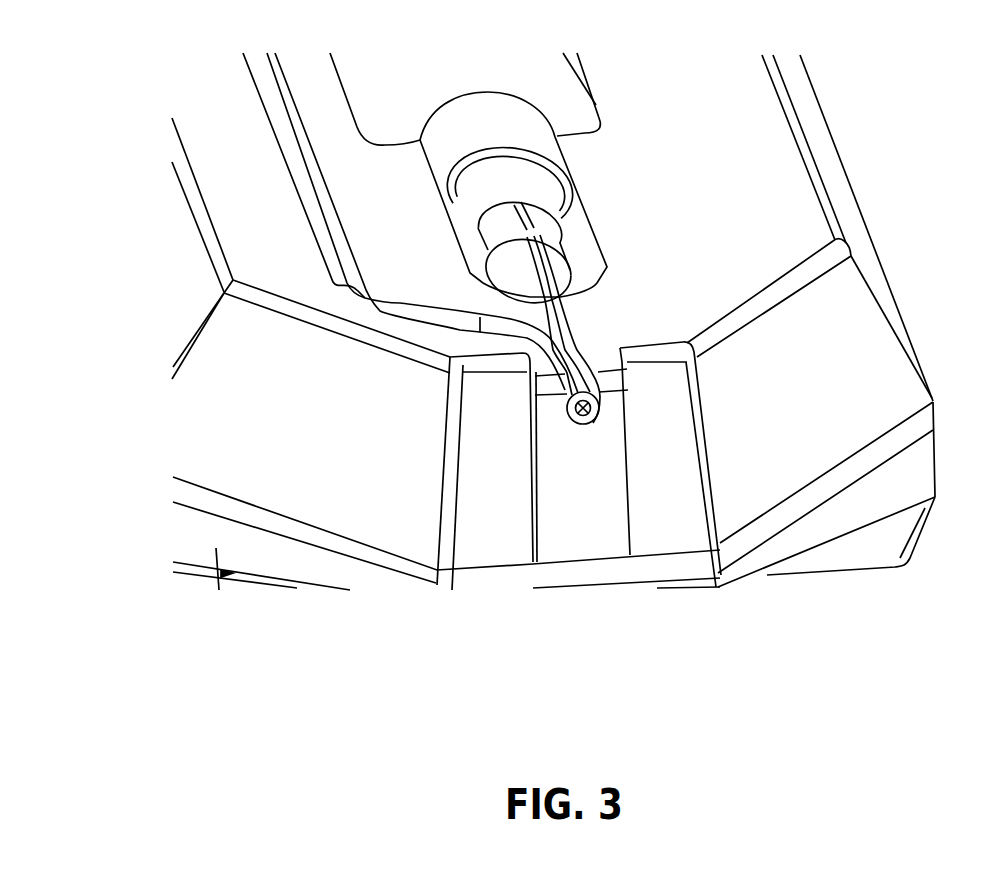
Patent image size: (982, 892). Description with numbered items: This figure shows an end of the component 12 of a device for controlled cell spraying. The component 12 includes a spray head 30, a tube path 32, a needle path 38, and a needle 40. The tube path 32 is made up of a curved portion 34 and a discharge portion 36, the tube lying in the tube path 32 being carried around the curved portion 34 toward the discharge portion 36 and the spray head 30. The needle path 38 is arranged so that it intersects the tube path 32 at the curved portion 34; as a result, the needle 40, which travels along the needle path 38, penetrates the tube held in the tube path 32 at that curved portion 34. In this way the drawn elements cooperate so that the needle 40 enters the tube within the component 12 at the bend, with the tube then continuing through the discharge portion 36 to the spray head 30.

The component 12 is at (820, 160).
The spray head 30 is at (601, 462).
The tube path 32 is at (410, 298).
The curved portion 34 is at (578, 343).
The discharge portion 36 is at (567, 412).
The needle path 38 is at (560, 297).
The needle 40 is at (596, 421).